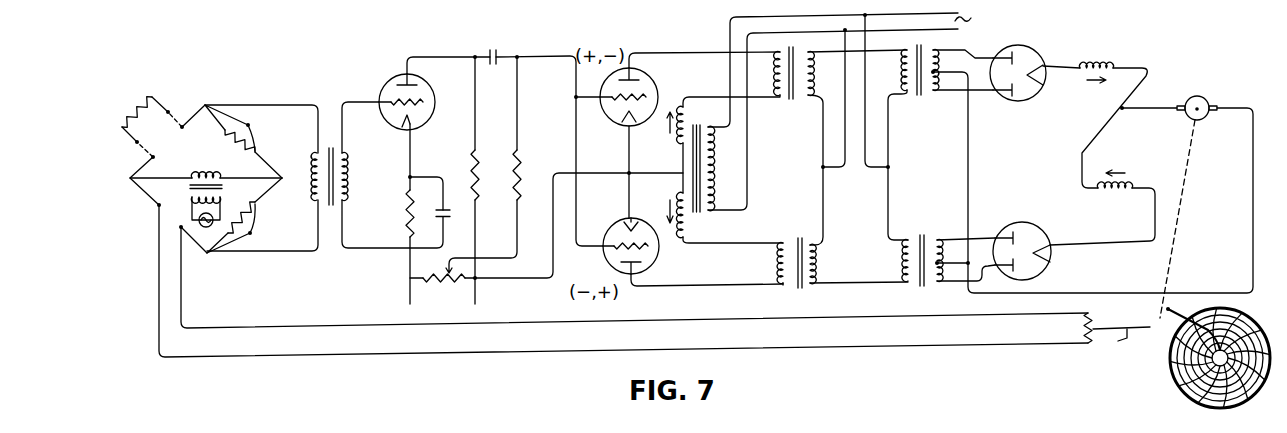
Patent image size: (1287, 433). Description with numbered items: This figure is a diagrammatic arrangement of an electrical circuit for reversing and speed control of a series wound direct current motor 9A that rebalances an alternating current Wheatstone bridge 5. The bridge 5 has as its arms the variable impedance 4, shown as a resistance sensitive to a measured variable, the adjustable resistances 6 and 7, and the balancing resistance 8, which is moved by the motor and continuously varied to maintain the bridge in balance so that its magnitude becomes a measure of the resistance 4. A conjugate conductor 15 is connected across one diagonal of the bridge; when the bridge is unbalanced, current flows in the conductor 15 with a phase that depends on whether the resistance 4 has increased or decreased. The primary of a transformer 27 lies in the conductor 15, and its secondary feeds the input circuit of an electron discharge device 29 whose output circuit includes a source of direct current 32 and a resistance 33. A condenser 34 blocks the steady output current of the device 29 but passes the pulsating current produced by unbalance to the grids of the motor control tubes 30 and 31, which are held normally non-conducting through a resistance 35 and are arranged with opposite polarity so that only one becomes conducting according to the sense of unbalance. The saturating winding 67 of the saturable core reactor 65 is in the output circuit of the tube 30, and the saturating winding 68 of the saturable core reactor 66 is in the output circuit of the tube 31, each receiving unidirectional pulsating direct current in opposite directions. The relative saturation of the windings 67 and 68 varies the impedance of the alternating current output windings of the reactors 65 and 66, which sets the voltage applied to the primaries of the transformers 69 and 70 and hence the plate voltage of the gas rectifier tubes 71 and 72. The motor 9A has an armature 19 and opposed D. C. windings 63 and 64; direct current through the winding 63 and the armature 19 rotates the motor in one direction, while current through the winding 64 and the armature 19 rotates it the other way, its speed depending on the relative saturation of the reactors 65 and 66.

The variable impedance 4 is at (122, 120).
The alternating current Wheatstone bridge 5 is at (197, 158).
The adjustable resistance 6 is at (257, 150).
The adjustable resistance 7 is at (257, 214).
The balancing resistance 8 is at (1107, 328).
The series wound direct current motor 9A is at (1128, 157).
The second conjugate conductor 15 is at (273, 104).
The armature 19 is at (1200, 97).
The transformer 27 is at (332, 203).
The electron discharge device 29 is at (431, 92).
The motor control tube 30 is at (654, 80).
The motor control tube 31 is at (659, 262).
The source of direct current 32 is at (443, 293).
The resistance 33 is at (462, 180).
The condenser 34 is at (493, 46).
The resistance 35 is at (483, 165).
The D. C. winding 63 is at (1092, 65).
The D. C. winding 64 is at (1110, 193).
The saturable core reactor 65 is at (794, 82).
The saturable core reactor 66 is at (796, 254).
The saturating winding 67 is at (772, 68).
The saturating winding 68 is at (780, 270).
The transformer 69 is at (913, 142).
The transformer 70 is at (922, 252).
The gas rectifier tube 71 is at (1030, 100).
The gas rectifier tube 72 is at (1036, 223).